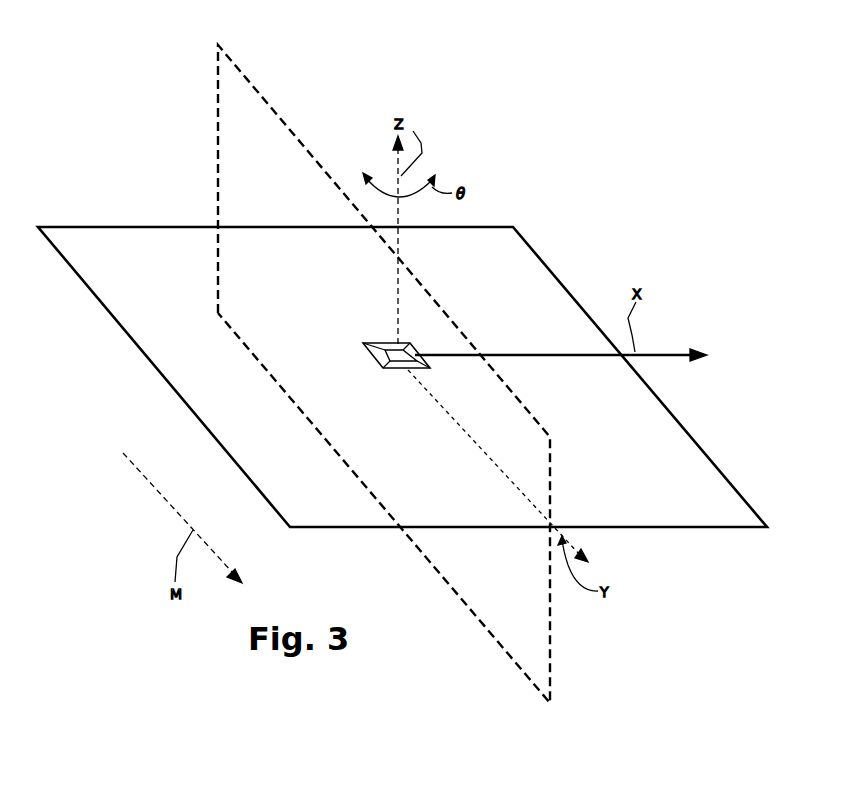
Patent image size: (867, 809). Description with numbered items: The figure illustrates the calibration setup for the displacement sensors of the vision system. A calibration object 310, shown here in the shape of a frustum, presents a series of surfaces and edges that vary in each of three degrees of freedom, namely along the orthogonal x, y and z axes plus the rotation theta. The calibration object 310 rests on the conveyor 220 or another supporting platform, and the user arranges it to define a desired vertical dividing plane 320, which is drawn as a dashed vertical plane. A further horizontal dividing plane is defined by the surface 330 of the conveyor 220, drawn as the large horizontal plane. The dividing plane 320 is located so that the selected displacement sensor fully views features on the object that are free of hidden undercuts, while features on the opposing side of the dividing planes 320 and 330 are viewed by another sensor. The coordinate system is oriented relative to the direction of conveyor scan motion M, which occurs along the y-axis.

The conveyor 220 is at (700, 536).
The calibration object 310 is at (365, 337).
The dividing plane 320 is at (560, 435).
The surface of the conveyor 330 is at (420, 343).